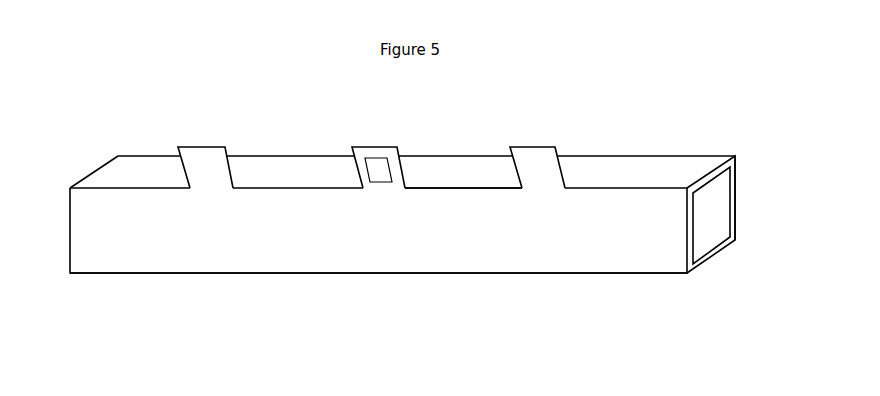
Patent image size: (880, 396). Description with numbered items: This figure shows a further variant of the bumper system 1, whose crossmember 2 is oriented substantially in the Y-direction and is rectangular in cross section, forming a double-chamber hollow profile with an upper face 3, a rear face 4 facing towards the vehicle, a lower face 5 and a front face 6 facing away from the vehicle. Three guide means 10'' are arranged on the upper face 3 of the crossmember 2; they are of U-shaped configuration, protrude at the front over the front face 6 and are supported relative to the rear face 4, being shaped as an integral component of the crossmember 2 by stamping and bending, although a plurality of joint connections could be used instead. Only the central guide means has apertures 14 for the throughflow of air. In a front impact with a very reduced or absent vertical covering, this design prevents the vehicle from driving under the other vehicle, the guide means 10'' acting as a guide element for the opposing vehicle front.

The bumper system 1 is at (104, 287).
The crossmember 2 is at (612, 273).
The upper face 3 is at (100, 122).
The rear face 4 is at (733, 150).
The lower face 5 is at (710, 203).
The front face 6 is at (463, 182).
The guide means 10'' is at (378, 133).
The aperture 14 is at (385, 170).